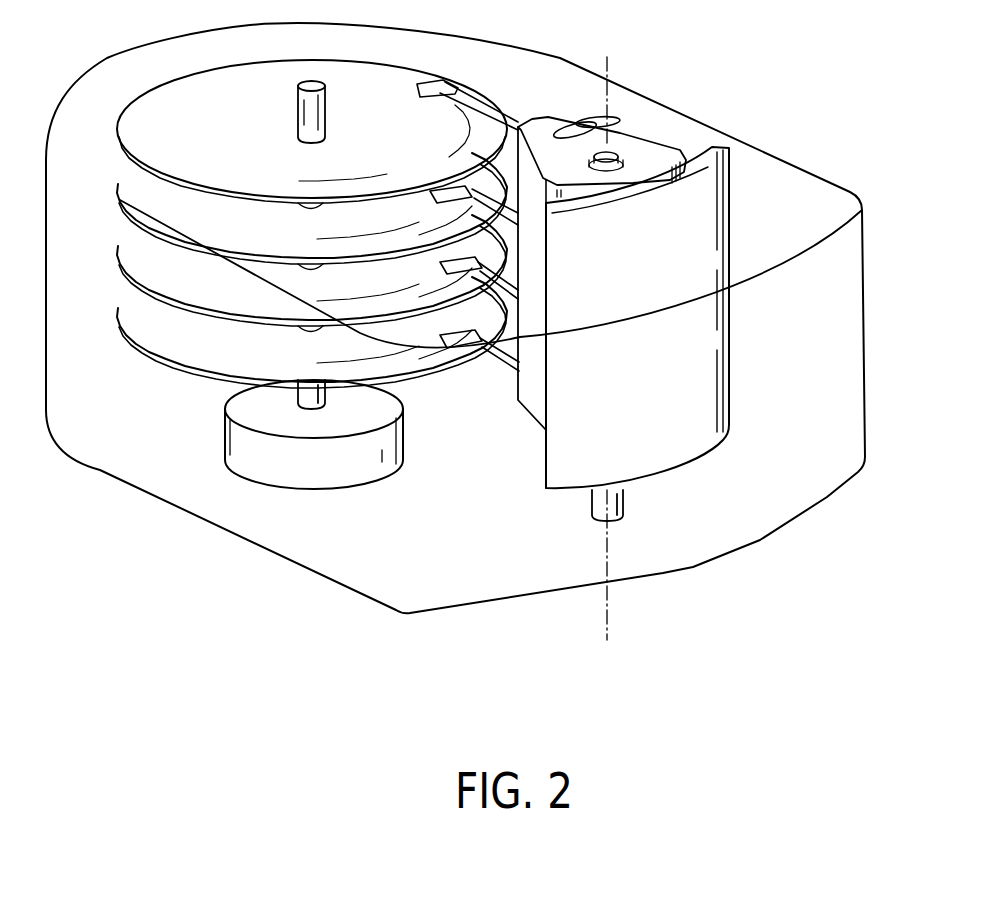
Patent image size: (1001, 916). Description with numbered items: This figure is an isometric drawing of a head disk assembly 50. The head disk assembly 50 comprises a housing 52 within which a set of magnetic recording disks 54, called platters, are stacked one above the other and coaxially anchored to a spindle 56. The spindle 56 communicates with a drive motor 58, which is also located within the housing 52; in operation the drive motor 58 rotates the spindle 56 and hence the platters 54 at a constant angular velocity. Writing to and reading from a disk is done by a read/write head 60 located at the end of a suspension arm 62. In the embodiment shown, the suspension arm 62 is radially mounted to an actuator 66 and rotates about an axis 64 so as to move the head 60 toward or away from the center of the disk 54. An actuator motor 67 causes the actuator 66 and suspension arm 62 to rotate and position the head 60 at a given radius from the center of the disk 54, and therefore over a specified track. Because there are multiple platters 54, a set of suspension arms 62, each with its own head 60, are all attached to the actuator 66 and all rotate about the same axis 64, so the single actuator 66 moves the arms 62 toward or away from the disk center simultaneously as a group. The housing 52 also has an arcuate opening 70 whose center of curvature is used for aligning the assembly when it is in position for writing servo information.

The head disk assembly 50 is at (772, 118).
The housing 52 is at (862, 255).
The magnetic recording disks 54 is at (118, 131).
The spindle 56 is at (311, 84).
The drive motor 58 is at (245, 443).
The read/write head 60 is at (447, 82).
The suspension arm 62 is at (516, 112).
The axis 64 is at (608, 542).
The actuator 66 is at (662, 156).
The actuator motor 67 is at (722, 428).
The arcuate opening 70 is at (589, 118).